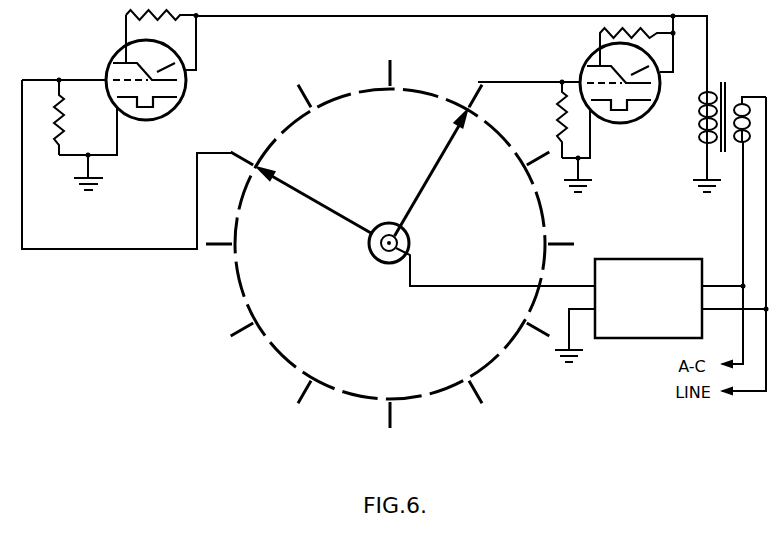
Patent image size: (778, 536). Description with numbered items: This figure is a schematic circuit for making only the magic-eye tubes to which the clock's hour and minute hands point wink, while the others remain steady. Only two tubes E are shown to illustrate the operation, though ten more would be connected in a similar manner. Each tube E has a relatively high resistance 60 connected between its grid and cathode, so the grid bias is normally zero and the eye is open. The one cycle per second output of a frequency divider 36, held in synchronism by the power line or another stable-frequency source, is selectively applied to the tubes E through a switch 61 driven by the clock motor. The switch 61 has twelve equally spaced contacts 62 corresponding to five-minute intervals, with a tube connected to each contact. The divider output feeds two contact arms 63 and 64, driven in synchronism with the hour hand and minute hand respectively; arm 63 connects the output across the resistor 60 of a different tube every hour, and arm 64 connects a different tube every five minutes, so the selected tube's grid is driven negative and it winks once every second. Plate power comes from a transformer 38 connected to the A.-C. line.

The frequency divider 36 is at (655, 339).
The transformer 38 is at (722, 79).
The resistance 60 is at (58, 142).
The switch 61 is at (378, 331).
The contacts 62 is at (437, 98).
The contact arm 63 is at (412, 206).
The contact arm 64 is at (345, 222).
The tube E is at (177, 107).